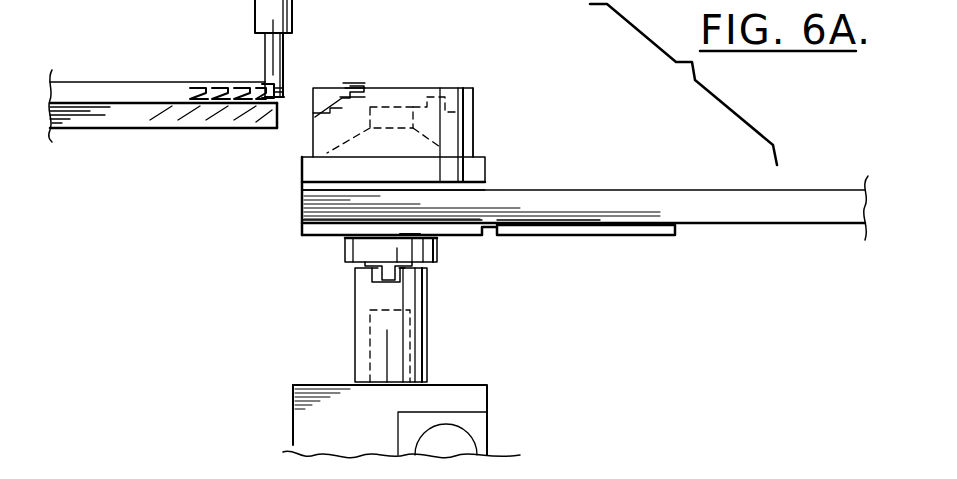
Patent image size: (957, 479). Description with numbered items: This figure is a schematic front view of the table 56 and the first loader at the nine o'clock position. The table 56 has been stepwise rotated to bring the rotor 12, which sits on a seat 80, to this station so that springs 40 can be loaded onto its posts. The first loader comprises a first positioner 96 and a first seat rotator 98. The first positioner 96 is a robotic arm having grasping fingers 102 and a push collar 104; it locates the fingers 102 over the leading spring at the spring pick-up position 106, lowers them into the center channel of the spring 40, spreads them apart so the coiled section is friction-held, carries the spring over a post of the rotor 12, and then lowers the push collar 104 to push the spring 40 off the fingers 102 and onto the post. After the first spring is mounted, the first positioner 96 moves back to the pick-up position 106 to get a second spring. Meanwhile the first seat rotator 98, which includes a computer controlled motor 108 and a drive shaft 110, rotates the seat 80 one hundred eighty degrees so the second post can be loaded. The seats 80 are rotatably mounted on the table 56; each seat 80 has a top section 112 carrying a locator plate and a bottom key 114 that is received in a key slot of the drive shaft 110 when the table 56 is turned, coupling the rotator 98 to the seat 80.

The rotor 12 is at (474, 121).
The springs 40 is at (223, 85).
The table 56 is at (670, 190).
The seat 80 is at (487, 168).
The first positioner 96 is at (294, 15).
The first seat rotator 98 is at (478, 385).
The grasping fingers 102 is at (285, 45).
The push collar 104 is at (254, 13).
The spring pick-up position 106 is at (270, 101).
The computer controlled motor 108 is at (295, 400).
The drive shaft 110 is at (428, 313).
The top section 112 is at (303, 168).
The bottom key 114 is at (384, 277).